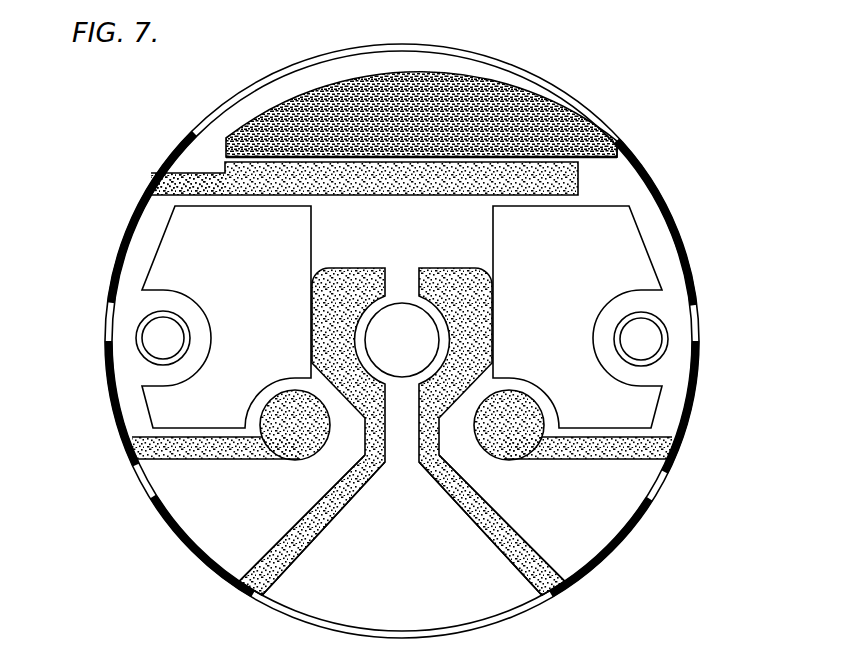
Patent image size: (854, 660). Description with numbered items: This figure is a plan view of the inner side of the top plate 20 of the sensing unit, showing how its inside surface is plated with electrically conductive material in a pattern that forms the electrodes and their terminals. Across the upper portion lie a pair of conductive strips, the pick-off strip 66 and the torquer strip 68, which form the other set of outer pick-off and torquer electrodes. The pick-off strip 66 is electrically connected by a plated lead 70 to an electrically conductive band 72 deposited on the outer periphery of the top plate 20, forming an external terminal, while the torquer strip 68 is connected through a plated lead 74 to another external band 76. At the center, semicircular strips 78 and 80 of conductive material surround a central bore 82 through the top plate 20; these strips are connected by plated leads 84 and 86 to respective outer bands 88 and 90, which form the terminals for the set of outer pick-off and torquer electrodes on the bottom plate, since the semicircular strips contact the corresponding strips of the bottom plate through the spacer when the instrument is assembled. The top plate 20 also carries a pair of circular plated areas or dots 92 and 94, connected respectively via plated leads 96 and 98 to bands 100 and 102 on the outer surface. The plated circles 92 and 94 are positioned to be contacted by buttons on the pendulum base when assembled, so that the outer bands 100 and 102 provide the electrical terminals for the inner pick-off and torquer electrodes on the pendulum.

The top plate 20 is at (153, 164).
The pick-off strip 66 is at (510, 120).
The torquer strip 68 is at (449, 175).
The plated lead 70 is at (595, 140).
The electrically conductive band 72 is at (653, 177).
The plated lead 74 is at (186, 180).
The external band 76 is at (138, 207).
The semicircular strip 78 is at (348, 293).
The semicircular strip 80 is at (467, 290).
The central bore 82 is at (391, 310).
The plated lead 84 is at (336, 509).
The plated lead 86 is at (472, 517).
The outer band 88 is at (182, 538).
The outer band 90 is at (598, 565).
The plated circle 92 is at (312, 455).
The plated circle 94 is at (483, 460).
The plated lead 96 is at (195, 462).
The plated lead 98 is at (600, 463).
The band 100 is at (118, 430).
The band 102 is at (688, 428).